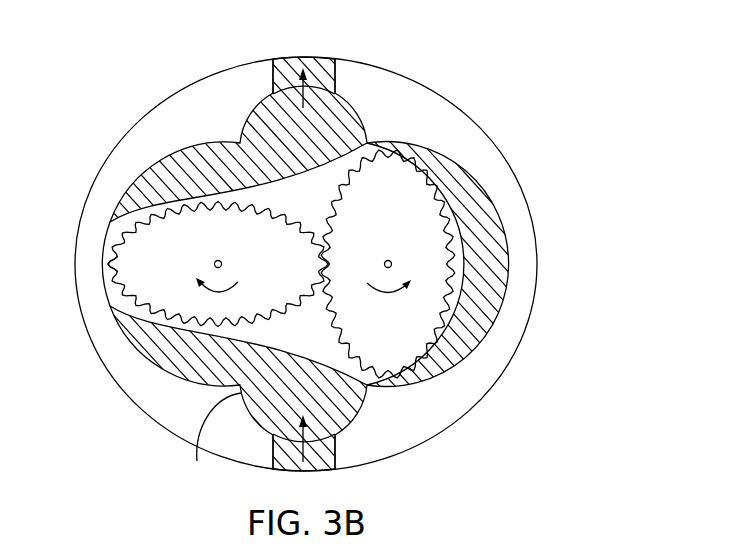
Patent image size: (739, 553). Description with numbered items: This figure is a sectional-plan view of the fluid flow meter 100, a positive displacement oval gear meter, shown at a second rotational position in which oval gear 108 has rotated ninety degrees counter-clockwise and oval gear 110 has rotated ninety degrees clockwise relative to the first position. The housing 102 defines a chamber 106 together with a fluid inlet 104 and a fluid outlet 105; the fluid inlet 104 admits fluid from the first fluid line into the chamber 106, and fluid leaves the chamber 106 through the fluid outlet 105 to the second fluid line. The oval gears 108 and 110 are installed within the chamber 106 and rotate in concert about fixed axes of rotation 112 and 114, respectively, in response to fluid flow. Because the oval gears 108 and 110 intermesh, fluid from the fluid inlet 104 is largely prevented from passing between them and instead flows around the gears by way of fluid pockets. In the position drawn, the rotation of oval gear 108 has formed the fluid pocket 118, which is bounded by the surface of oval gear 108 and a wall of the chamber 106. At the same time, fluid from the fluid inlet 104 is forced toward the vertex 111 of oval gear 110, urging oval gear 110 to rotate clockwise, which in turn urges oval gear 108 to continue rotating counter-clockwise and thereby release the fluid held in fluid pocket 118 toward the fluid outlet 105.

The fluid flow meter 100 is at (140, 60).
The housing 102 is at (397, 104).
The fluid inlet 104 is at (320, 455).
The fluid outlet 105 is at (317, 60).
The chamber 106 is at (208, 439).
The oval gear 108 is at (441, 343).
The oval gear 110 is at (155, 278).
The vertex 111 is at (107, 265).
The axis of rotation 112 is at (392, 259).
The axis of rotation 114 is at (215, 262).
The fluid pocket 118 is at (487, 274).